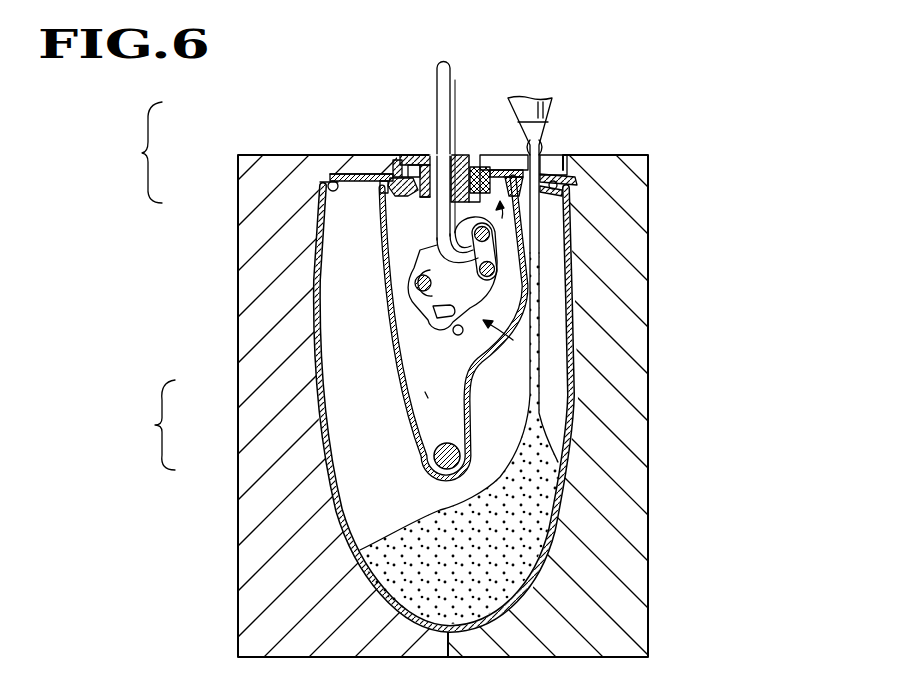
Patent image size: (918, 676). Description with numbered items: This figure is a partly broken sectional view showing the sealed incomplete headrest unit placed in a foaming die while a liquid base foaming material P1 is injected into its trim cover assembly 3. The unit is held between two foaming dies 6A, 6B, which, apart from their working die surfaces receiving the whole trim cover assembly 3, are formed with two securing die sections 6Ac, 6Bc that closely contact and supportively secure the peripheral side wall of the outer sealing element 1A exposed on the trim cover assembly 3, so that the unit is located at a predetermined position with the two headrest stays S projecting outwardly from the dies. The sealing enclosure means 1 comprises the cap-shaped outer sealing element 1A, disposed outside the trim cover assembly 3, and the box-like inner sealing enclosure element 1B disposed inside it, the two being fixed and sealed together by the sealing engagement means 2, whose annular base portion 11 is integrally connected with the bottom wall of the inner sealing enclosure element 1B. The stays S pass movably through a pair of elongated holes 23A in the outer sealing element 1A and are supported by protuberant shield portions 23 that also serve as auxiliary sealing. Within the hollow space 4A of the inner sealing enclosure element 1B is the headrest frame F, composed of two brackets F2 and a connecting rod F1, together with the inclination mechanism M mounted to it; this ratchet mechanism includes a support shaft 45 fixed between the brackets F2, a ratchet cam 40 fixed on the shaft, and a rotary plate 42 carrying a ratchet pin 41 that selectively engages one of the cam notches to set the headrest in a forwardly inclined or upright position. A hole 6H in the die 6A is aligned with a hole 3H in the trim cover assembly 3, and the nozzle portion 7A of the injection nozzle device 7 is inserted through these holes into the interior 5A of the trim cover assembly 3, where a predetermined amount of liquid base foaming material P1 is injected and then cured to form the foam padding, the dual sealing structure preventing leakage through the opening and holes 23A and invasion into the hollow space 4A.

The sealing enclosure means 1 is at (281, 161).
The outer sealing element 1A is at (401, 148).
The inner sealing enclosure element 1B is at (366, 215).
The sealing engagement means 2 is at (522, 251).
The trim cover assembly 3 is at (520, 401).
The hole 3H is at (575, 202).
The hollow space 4A is at (456, 380).
The interior 5A is at (401, 500).
The foaming die 6A is at (648, 497).
The securing die section 6Ac is at (500, 165).
The foaming die 6B is at (238, 503).
The securing die section 6Bc is at (403, 150).
The hole 6H is at (540, 147).
The injection nozzle device 7 is at (551, 112).
The nozzle portion 7A is at (540, 218).
The annular base portion 11 is at (377, 228).
The protuberant shield portion 23 is at (432, 207).
The elongated hole 23A is at (462, 150).
The ratchet cam 40 is at (497, 295).
The ratchet pin 41 is at (412, 280).
The rotary plate 42 is at (432, 318).
The support shaft 45 is at (498, 265).
The headrest frame F is at (289, 425).
The connecting rod F1 is at (432, 447).
The bracket F2 is at (425, 395).
The inclination mechanism M is at (515, 340).
The liquid base foaming material P1 is at (520, 555).
The headrest stay S is at (435, 90).